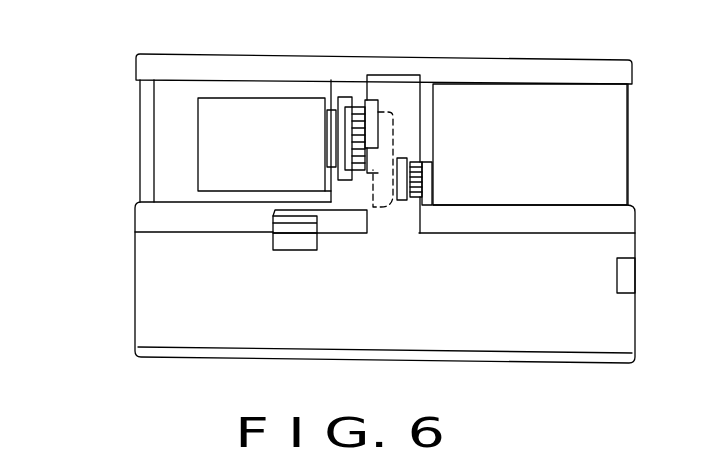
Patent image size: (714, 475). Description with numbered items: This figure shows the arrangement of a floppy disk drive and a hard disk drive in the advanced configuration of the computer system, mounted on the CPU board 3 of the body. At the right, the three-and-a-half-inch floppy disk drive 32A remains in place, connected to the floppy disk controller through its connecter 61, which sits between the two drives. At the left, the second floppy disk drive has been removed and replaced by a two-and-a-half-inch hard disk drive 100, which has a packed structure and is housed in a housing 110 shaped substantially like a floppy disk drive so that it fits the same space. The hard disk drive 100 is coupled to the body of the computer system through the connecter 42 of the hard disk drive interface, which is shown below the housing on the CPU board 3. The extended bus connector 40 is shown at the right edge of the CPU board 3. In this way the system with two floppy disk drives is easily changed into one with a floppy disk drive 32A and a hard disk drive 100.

The CPU board 3 is at (625, 335).
The floppy disk drive 32A is at (627, 150).
The extended bus connector 40 is at (631, 278).
The connecter 42 is at (298, 250).
The connecter 61 is at (403, 158).
The hard disk drive 100 is at (229, 107).
The housing 110 is at (290, 80).